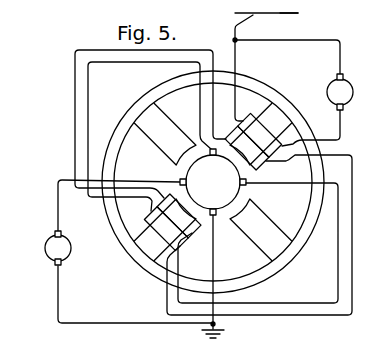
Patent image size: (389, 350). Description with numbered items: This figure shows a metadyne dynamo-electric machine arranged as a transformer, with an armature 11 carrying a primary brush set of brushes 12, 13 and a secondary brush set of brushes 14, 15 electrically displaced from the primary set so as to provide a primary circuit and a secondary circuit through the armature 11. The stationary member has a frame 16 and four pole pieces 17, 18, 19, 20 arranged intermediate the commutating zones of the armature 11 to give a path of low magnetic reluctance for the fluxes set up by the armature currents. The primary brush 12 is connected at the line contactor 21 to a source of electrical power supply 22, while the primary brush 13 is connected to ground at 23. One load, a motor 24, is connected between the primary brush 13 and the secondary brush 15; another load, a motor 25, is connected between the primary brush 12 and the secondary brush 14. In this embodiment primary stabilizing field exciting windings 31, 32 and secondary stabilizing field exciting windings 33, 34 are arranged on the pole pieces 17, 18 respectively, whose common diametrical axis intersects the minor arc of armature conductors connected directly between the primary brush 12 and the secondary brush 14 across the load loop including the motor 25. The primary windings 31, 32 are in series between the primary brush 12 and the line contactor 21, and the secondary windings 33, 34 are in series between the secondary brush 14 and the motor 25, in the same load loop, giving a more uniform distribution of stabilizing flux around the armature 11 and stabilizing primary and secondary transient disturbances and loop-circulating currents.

The armature 11 is at (247, 186).
The primary brush 12 is at (203, 140).
The primary brush 13 is at (216, 217).
The secondary brush 14 is at (247, 181).
The secondary brush 15 is at (180, 178).
The frame 16 is at (277, 273).
The pole piece 17 is at (272, 153).
The pole piece 18 is at (176, 250).
The pole piece 19 is at (272, 230).
The pole piece 20 is at (178, 121).
The line contactor 21 is at (251, 17).
The source of electrical power supply 22 is at (288, 14).
The ground 23 is at (215, 326).
The motor 24 is at (46, 254).
The motor 25 is at (353, 90).
The primary stabilizing field exciting winding 31 is at (231, 137).
The primary stabilizing field exciting winding 32 is at (185, 238).
The secondary stabilizing field exciting winding 33 is at (251, 115).
The secondary stabilizing field exciting winding 34 is at (147, 218).